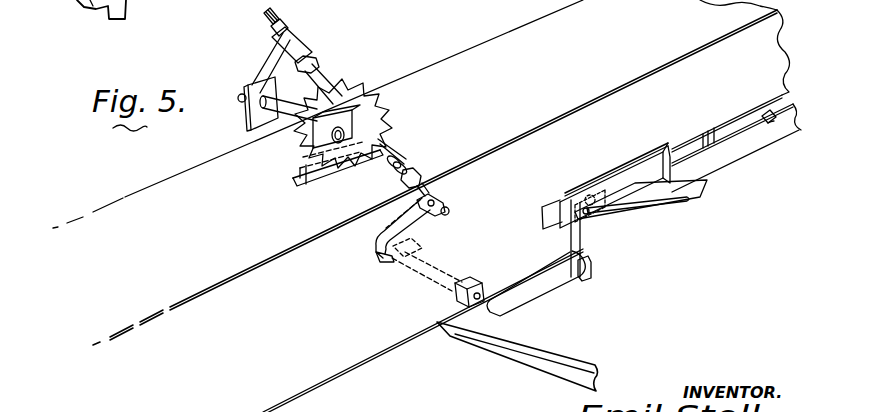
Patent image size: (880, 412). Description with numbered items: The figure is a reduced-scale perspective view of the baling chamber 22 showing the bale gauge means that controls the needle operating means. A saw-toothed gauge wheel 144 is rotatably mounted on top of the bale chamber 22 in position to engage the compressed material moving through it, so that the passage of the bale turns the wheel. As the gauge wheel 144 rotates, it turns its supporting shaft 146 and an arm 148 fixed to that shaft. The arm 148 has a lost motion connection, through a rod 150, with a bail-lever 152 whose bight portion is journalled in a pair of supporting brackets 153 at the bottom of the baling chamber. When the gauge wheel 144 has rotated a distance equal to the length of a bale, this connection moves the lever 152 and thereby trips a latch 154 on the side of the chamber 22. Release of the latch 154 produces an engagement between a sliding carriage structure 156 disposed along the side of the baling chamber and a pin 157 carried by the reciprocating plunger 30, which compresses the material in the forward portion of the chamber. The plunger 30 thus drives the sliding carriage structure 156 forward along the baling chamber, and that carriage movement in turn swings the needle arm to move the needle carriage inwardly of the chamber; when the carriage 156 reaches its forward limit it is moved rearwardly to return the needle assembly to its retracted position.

The baling chamber 22 is at (515, 98).
The reciprocating plunger 30 is at (723, 128).
The saw-toothed gauge wheel 144 is at (288, 168).
The supporting shaft 146 is at (253, 141).
The arm 148 is at (267, 56).
The rod 150 is at (318, 75).
The bail-lever 152 is at (536, 293).
The supporting brackets 153 is at (408, 249).
The latch 154 is at (588, 229).
The sliding carriage structure 156 is at (626, 163).
The pin 157 is at (771, 124).